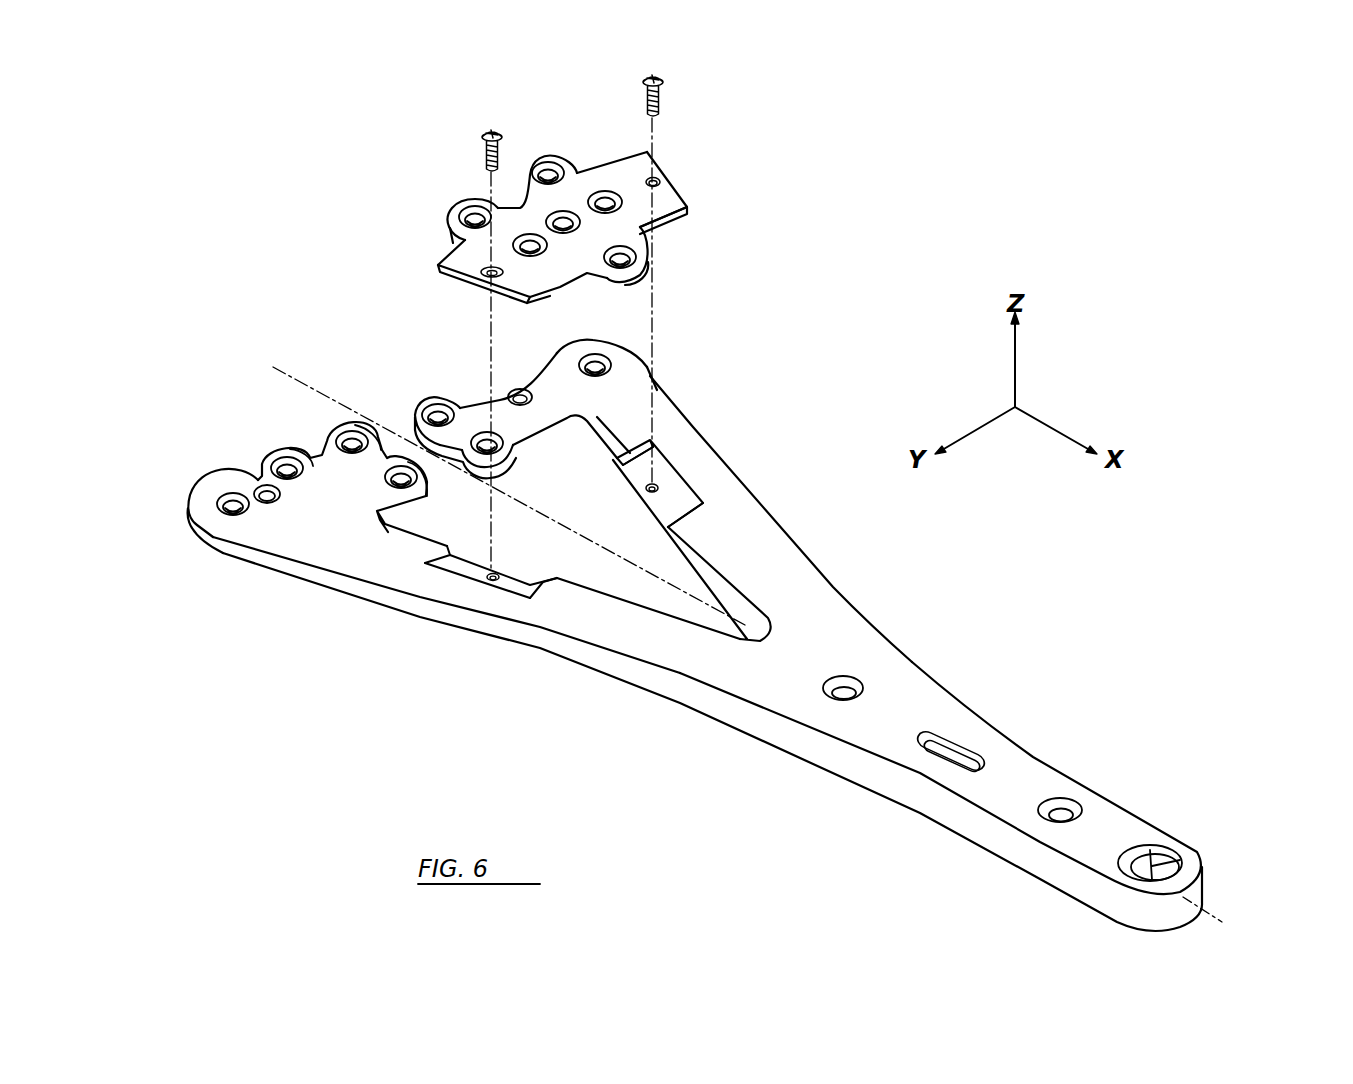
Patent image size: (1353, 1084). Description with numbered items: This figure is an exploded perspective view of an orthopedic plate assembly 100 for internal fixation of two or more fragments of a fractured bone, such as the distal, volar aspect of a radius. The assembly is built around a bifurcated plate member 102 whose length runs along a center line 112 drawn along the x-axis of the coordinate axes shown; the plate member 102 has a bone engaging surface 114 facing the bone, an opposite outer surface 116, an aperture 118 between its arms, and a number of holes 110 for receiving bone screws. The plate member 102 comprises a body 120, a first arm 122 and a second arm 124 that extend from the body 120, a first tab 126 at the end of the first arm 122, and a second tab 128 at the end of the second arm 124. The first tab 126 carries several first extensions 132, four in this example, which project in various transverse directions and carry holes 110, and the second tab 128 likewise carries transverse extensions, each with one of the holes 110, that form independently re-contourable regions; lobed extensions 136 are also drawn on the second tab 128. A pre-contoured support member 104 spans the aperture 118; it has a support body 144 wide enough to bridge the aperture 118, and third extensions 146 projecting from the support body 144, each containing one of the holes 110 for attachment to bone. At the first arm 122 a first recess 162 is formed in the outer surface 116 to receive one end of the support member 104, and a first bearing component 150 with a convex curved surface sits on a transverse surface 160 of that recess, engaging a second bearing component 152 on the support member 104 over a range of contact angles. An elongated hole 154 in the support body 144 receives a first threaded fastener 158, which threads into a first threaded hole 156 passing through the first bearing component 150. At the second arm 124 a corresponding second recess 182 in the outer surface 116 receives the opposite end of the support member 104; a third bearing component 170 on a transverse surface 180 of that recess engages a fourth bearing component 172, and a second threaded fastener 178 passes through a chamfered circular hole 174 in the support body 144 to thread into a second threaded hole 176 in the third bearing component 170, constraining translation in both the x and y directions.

The orthopedic plate assembly 100 is at (820, 176).
The bifurcated plate member 102 is at (832, 598).
The support member 104 is at (460, 265).
The holes 110 is at (258, 483).
The center line 112 is at (1210, 908).
The bone engaging surface 114 is at (683, 710).
The outer surface 116 is at (910, 670).
The aperture 118 is at (480, 526).
The body 120 is at (1030, 758).
The first arm 122 is at (670, 647).
The second arm 124 is at (750, 523).
The first tab 126 is at (275, 533).
The second tab 128 is at (480, 403).
The first extensions 132 is at (200, 493).
The lobes 136 is at (583, 352).
The support body 144 is at (673, 197).
The third extensions 146 is at (527, 175).
The first bearing component 150 is at (467, 570).
The second bearing component 152 is at (548, 290).
The elongated hole 154 is at (488, 273).
The first threaded hole 156 is at (482, 575).
The first threaded fastener 158 is at (482, 140).
The transverse surface 160 is at (524, 582).
The first recess 162 is at (517, 597).
The third bearing component 170 is at (680, 500).
The fourth bearing component 172 is at (670, 223).
The circular hole 174 is at (658, 177).
The second threaded hole 176 is at (657, 483).
The second threaded fastener 178 is at (664, 90).
The transverse surface 180 is at (644, 477).
The second recess 182 is at (706, 498).